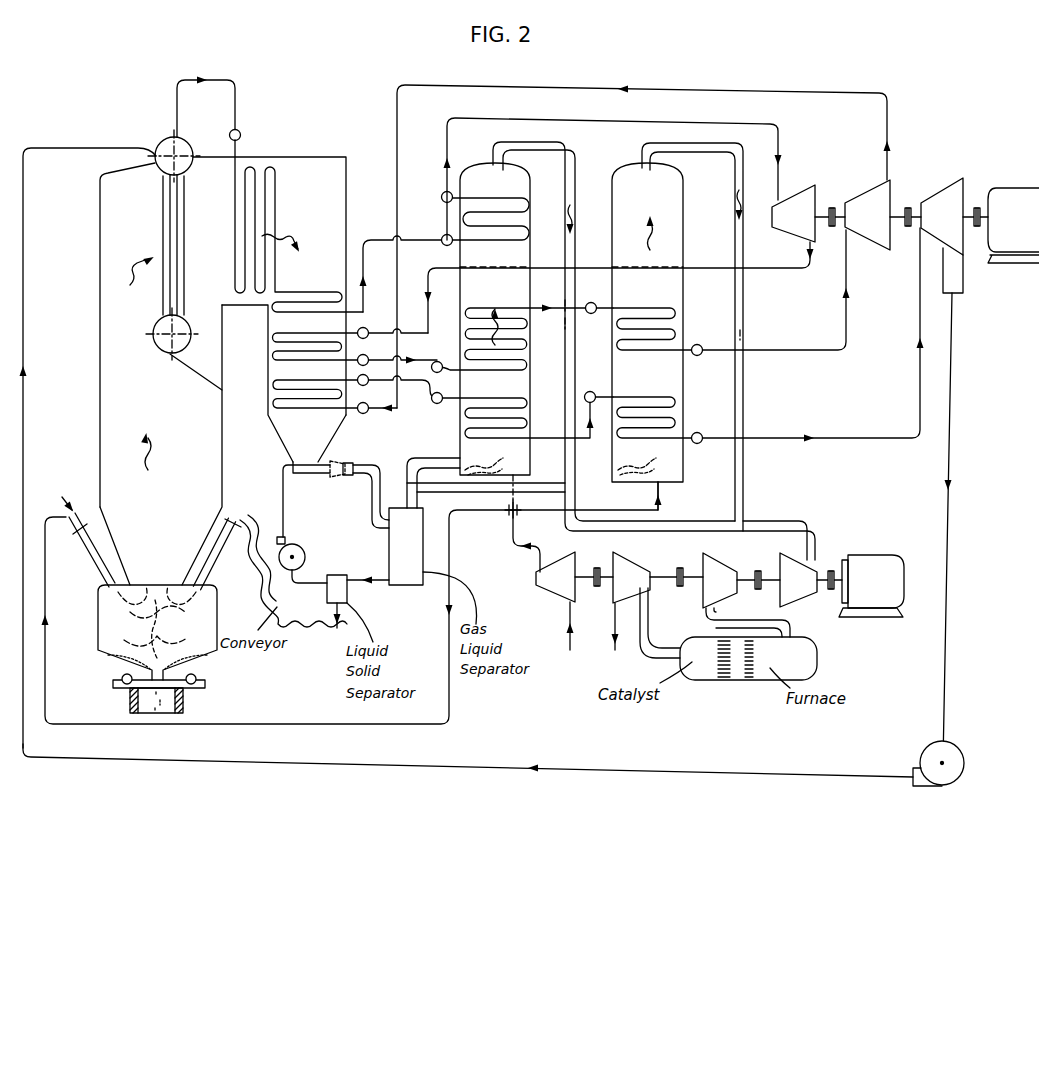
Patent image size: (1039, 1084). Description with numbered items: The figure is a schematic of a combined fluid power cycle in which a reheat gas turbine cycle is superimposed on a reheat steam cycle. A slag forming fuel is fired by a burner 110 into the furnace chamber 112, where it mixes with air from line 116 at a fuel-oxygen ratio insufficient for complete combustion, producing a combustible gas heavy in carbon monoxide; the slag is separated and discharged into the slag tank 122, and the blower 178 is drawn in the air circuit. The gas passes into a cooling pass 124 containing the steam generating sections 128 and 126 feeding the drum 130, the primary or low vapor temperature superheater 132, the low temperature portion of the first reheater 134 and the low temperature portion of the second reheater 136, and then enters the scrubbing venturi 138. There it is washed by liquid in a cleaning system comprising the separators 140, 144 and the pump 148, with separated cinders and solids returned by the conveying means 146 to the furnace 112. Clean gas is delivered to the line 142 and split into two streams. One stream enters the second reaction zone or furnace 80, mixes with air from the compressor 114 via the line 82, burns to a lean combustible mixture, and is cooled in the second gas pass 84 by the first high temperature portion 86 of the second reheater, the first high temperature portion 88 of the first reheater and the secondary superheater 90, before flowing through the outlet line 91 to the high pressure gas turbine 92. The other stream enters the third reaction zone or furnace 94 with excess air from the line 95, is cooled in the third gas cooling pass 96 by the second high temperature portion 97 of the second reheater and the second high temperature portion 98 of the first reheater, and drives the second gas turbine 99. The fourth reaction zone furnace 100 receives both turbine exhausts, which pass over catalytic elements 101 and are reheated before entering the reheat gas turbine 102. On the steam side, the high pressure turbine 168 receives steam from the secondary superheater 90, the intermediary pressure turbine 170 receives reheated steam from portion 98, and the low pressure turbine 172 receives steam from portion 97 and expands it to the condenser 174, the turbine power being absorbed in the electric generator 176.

The second reaction zone or furnace 80 is at (520, 470).
The line 82 is at (512, 482).
The second gas pass 84 is at (512, 260).
The first high temperature portion of the second reheater 86 is at (498, 404).
The first high temperature portion of the first reheater 88 is at (482, 308).
The secondary superheater 90 is at (494, 210).
The outlet line 91 is at (565, 150).
The high pressure gas turbine 92 is at (786, 572).
The third reaction zone or furnace 94 is at (676, 470).
The line 95 is at (664, 490).
The third gas cooling pass 96 is at (683, 226).
The second high temperature portion of the second reheater 97 is at (658, 410).
The second high temperature portion of the first reheater 98 is at (648, 318).
The second gas turbine 99 is at (718, 596).
The fourth reaction zone furnace 100 is at (805, 668).
The catalytic elements 101 is at (743, 680).
The reheat gas turbine 102 is at (628, 566).
The burner 110 is at (98, 550).
The furnace chamber 112 is at (170, 558).
The compressor 114 is at (556, 583).
The line 116 is at (350, 724).
The slag tank 122 is at (175, 700).
The cooling pass 124 is at (222, 203).
The steam generating section 126 is at (163, 222).
The steam generating section 128 is at (100, 292).
The steam drum 130 is at (172, 148).
The primary or low vapor temperature superheater 132 is at (262, 185).
The low temperature portion of the first reheater 134 is at (277, 347).
The low temperature portion of the second reheater 136 is at (277, 394).
The scrubbing venturi 138 is at (328, 476).
The separator 140 is at (389, 558).
The line 142 is at (403, 500).
The separator 144 is at (347, 594).
The conveying means 146 is at (314, 634).
The pump 148 is at (304, 560).
The high pressure turbine 168 is at (796, 205).
The intermediary pressure turbine 170 is at (866, 205).
The low pressure turbine 172 is at (940, 200).
The condenser 174 is at (953, 275).
The electric generator 176 is at (1025, 198).
The blower 178 is at (936, 765).